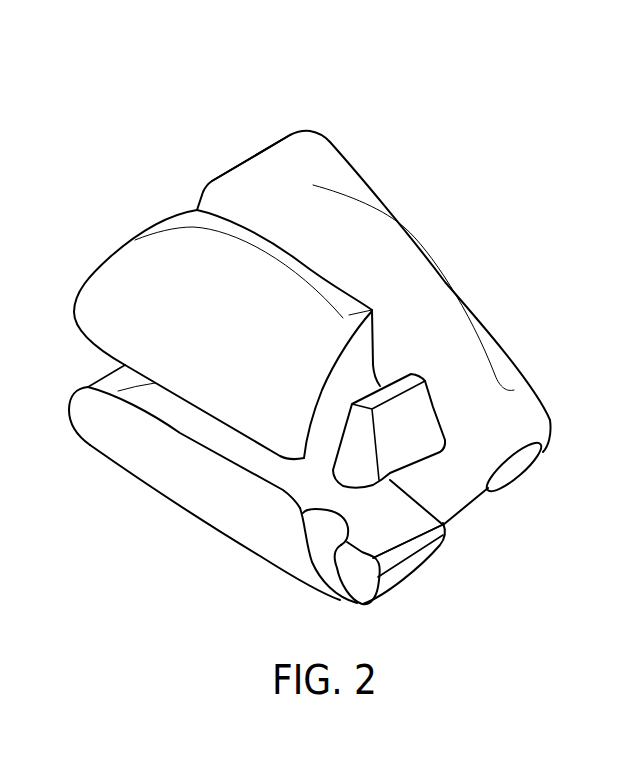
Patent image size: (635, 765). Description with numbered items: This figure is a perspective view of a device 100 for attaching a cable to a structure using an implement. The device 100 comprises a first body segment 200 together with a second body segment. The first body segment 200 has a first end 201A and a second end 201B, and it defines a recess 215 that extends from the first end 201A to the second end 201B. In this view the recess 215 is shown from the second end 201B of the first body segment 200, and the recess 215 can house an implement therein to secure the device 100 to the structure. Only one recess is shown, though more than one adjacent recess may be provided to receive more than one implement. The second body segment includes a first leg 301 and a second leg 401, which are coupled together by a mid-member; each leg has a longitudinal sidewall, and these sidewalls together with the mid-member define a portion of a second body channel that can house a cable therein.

The device 100 is at (254, 489).
The first body segment 200 is at (330, 142).
The first end 201A is at (141, 158).
The second end 201B is at (457, 600).
The recess 215 is at (545, 451).
The first leg 301 is at (110, 257).
The second leg 401 is at (98, 442).